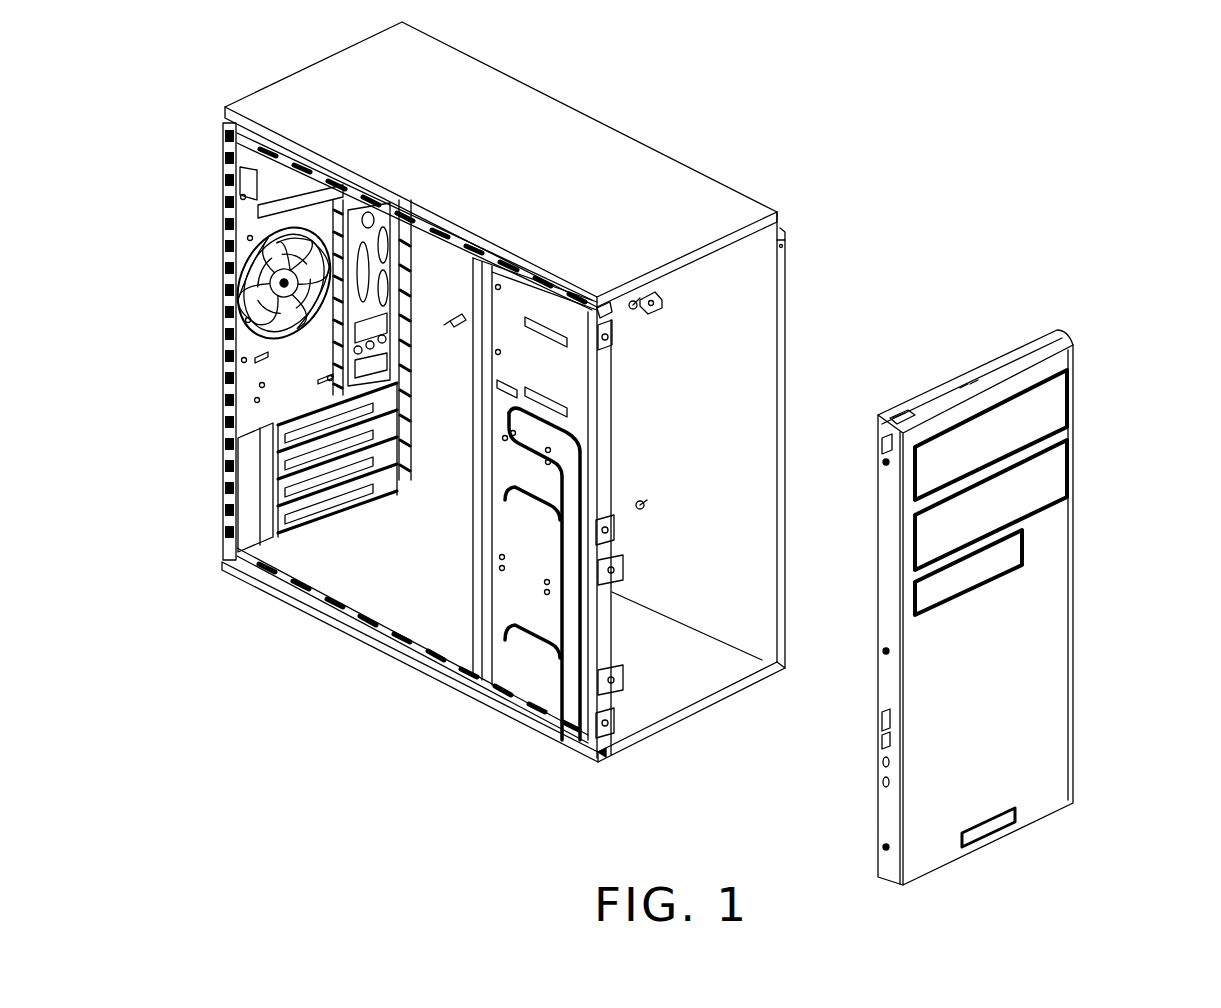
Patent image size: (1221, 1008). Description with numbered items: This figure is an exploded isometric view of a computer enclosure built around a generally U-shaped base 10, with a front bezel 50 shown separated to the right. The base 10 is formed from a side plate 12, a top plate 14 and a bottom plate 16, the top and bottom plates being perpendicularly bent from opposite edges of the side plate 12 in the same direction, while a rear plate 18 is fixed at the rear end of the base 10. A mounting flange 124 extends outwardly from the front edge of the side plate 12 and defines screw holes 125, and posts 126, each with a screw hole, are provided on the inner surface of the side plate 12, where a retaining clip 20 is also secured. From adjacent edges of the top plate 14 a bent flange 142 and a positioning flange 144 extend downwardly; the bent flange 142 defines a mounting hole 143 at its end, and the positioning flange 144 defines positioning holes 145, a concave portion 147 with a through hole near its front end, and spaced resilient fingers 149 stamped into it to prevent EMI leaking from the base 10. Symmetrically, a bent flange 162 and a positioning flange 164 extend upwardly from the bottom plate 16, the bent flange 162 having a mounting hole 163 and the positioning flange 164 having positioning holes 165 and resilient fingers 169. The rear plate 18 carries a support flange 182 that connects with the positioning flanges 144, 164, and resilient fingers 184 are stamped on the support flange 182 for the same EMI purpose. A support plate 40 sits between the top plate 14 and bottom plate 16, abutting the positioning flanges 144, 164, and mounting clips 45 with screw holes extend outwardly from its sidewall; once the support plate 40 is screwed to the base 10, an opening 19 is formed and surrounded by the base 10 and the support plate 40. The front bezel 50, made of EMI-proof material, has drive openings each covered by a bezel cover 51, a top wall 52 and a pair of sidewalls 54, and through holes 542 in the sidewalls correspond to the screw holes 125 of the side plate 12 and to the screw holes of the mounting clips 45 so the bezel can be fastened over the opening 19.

The base 10 is at (648, 130).
The side plate 12 is at (762, 342).
The top plate 14 is at (485, 75).
The bottom plate 16 is at (680, 695).
The rear plate 18 is at (238, 381).
The opening 19 is at (740, 480).
The retaining clip 20 is at (658, 300).
The support plate 40 is at (540, 692).
The mounting clips 45 is at (618, 345).
The front bezel 50 is at (1060, 608).
The bezel cover 51 is at (1058, 415).
The top wall 52 is at (1017, 360).
The sidewalls 54 is at (890, 555).
The mounting flange 124 is at (786, 382).
The screw holes 125 is at (790, 248).
The posts 126 is at (637, 308).
The bent flange 142 is at (745, 235).
The mounting hole 143 is at (608, 300).
The positioning flange 144 is at (388, 195).
The positioning holes 145 is at (465, 242).
The concave portion 147 is at (512, 272).
The resilient fingers 149 is at (305, 165).
The bent flange 162 is at (650, 740).
The mounting hole 163 is at (610, 762).
The positioning flange 164 is at (400, 660).
The positioning holes 165 is at (445, 690).
The resilient fingers 169 is at (325, 615).
The support flange 182 is at (232, 216).
The resilient fingers 184 is at (232, 146).
The through holes 542 is at (882, 655).